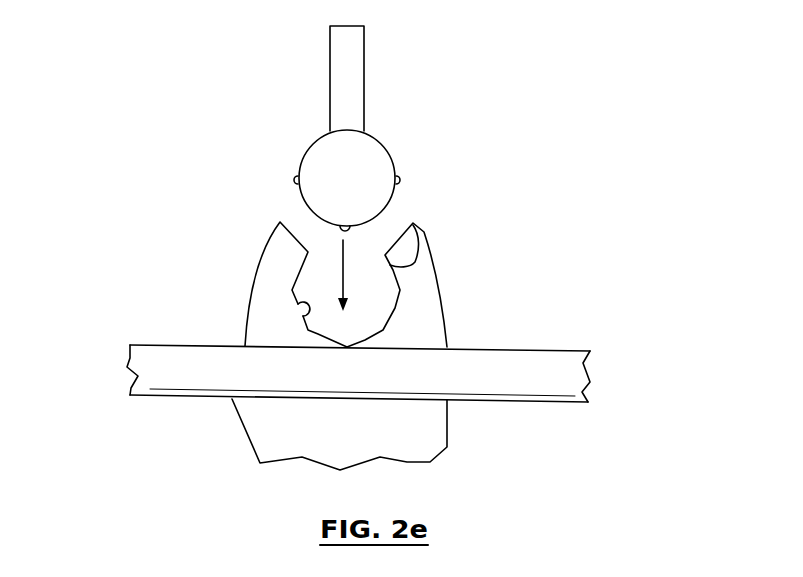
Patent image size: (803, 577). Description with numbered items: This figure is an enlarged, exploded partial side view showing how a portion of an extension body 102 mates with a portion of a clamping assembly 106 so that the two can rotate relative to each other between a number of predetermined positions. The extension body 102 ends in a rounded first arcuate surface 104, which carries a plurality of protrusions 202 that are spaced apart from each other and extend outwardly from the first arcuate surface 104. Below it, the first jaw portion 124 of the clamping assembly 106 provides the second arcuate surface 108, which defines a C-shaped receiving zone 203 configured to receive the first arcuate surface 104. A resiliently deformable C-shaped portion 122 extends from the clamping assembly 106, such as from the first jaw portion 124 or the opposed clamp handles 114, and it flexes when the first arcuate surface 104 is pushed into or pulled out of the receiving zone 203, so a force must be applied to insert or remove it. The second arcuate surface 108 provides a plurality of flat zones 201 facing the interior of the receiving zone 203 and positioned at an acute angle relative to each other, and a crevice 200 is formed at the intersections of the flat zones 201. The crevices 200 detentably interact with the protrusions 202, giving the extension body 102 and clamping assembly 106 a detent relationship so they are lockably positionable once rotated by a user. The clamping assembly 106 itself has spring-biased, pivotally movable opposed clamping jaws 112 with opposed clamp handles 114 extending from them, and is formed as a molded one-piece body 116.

The extension body 102 is at (355, 86).
The first arcuate surface 104 is at (390, 153).
The clamping assembly 106 is at (155, 316).
The second arcuate surface 108 is at (300, 312).
The opposed clamping jaws 112 is at (692, 265).
The opposed clamp handles 114 is at (143, 363).
The molded one-piece body 116 is at (363, 190).
The C-shaped portion 122 is at (273, 271).
The first jaw portion 124 is at (553, 360).
The crevice 200 is at (290, 288).
The flat zones 201 is at (424, 233).
The protrusions 202 is at (295, 180).
The receiving zone 203 is at (360, 276).